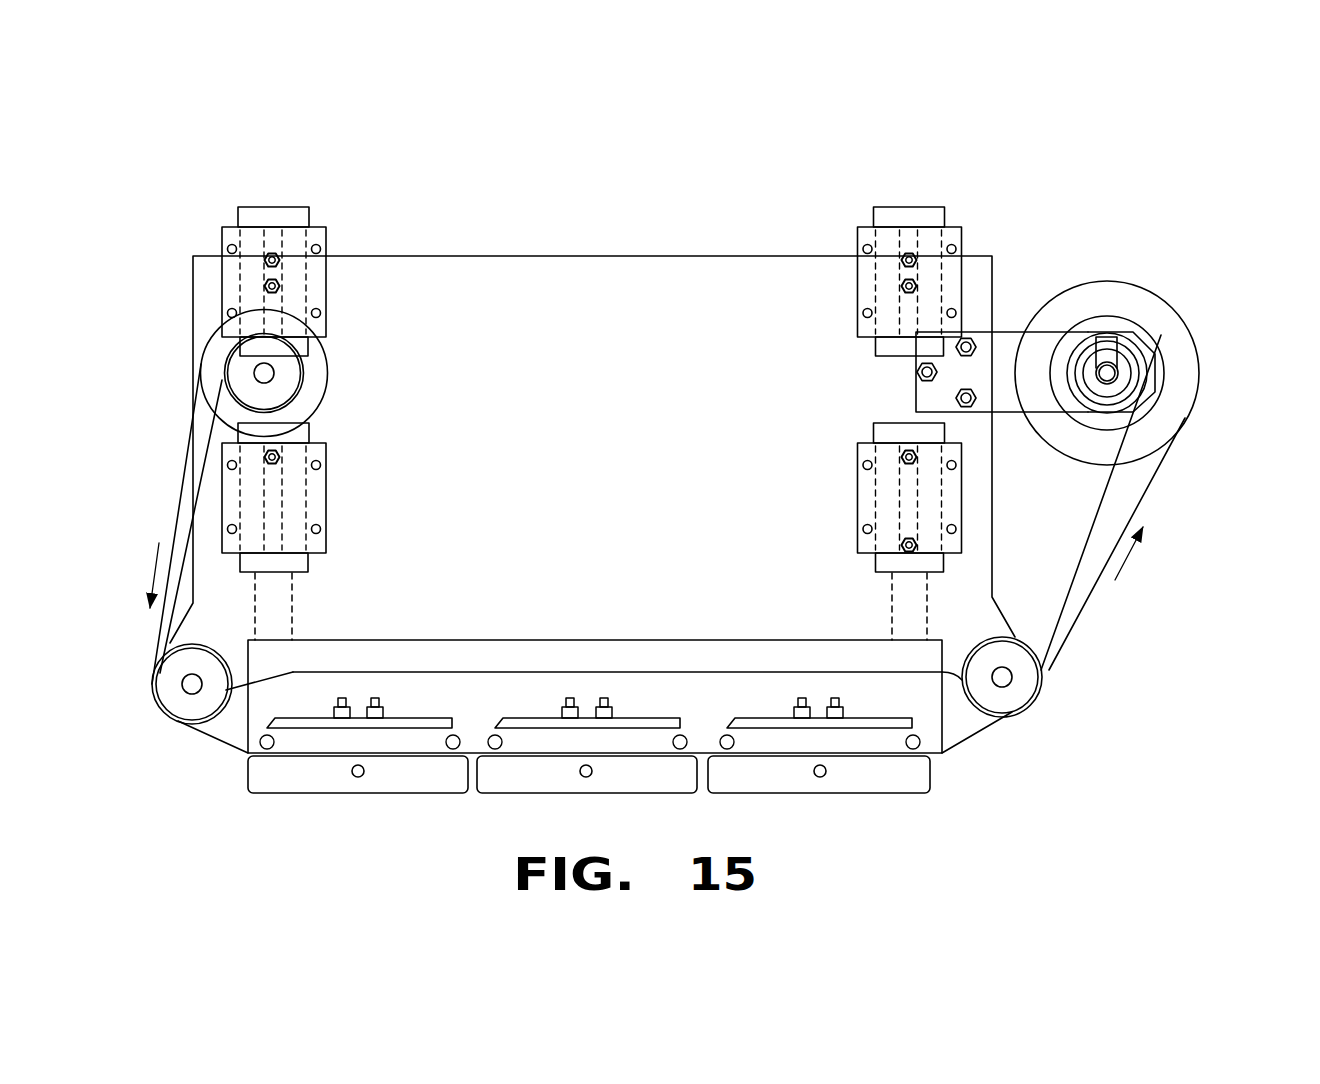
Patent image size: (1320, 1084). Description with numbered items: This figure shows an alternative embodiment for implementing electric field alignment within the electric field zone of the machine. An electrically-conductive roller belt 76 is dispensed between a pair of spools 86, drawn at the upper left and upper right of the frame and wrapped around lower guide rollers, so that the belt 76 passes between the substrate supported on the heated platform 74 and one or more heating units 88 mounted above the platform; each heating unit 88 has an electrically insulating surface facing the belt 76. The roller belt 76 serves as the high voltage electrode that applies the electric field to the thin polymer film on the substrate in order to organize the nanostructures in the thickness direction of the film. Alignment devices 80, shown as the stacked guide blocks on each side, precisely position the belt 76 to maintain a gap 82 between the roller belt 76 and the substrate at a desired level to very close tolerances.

The heated platform 74 is at (275, 785).
The electrically-conductive roller belt 76 is at (1157, 468).
The alignment devices 80 is at (321, 206).
The gap 82 is at (912, 756).
The spools 86 is at (328, 374).
The heating units 88 is at (780, 693).